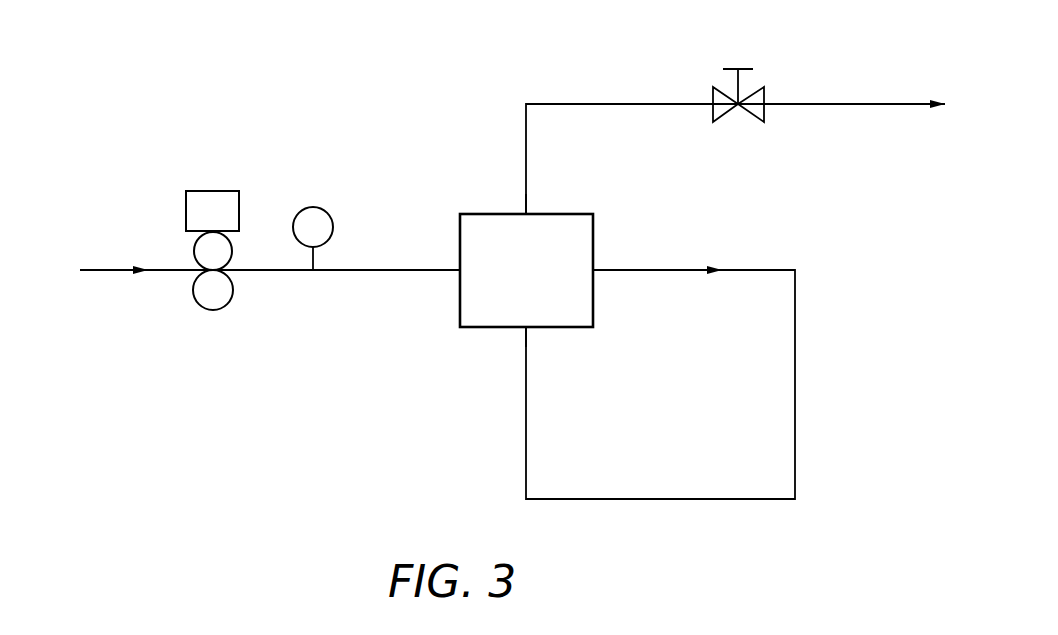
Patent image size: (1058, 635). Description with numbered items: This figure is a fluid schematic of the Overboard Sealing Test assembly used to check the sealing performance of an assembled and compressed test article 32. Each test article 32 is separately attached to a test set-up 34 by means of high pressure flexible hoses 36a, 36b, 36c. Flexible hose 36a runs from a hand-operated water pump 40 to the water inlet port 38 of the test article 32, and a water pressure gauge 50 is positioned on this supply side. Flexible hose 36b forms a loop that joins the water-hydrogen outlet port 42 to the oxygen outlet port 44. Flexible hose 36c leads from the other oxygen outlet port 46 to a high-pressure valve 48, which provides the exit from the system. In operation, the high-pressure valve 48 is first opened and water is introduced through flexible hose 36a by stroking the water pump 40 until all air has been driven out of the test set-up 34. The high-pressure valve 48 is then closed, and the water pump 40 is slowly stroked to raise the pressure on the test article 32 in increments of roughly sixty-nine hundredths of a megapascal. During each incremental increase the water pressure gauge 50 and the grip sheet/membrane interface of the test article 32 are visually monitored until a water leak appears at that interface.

The test article 32 is at (546, 292).
The test set-up 34 is at (385, 378).
The flexible hose 36a is at (347, 272).
The flexible hose 36b is at (760, 271).
The flexible hose 36c is at (623, 105).
The water inlet port 38 is at (460, 272).
The hand-operated water pump 40 is at (208, 191).
The water-hydrogen outlet port 42 is at (593, 272).
The oxygen outlet port 44 is at (530, 328).
The oxygen outlet port 46 is at (528, 212).
The high-pressure valve 48 is at (725, 68).
The water pressure gauge 50 is at (313, 207).